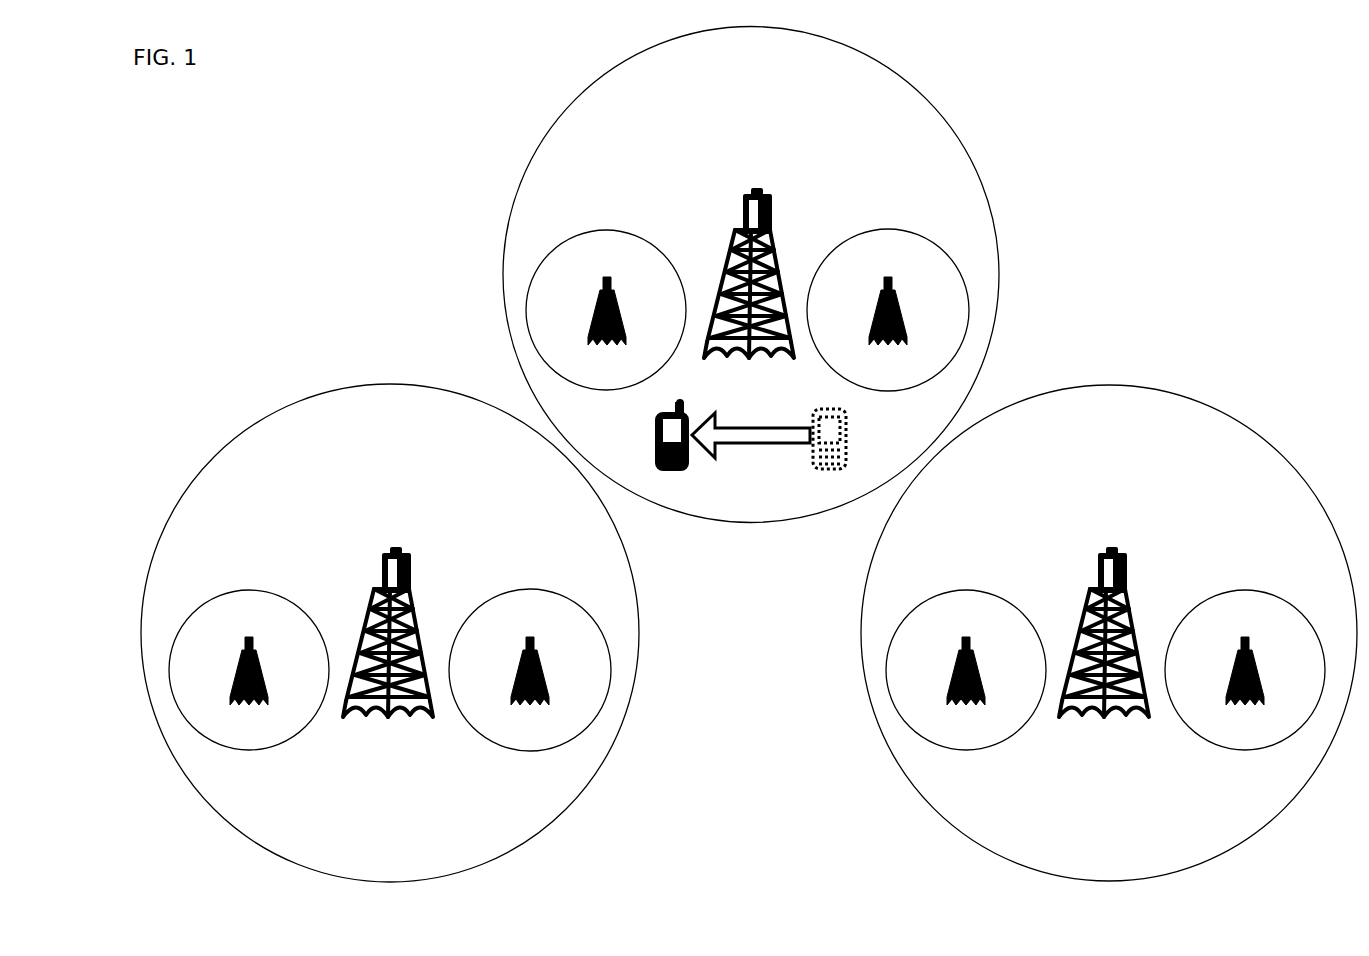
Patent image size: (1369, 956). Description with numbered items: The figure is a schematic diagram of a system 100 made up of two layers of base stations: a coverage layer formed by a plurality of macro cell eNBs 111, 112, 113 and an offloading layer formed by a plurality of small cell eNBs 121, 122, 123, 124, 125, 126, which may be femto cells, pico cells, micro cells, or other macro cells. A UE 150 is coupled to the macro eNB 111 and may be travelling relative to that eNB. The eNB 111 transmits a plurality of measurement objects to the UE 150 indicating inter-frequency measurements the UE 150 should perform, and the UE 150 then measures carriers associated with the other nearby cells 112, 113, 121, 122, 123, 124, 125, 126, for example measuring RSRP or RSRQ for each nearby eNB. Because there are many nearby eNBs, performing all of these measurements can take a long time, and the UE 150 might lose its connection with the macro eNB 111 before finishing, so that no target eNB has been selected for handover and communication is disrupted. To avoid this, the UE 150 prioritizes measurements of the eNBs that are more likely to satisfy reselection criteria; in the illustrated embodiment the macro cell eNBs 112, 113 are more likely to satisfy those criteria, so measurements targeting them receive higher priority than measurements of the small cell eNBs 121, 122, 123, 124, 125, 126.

The system 100 is at (1236, 82).
The macro cell eNB 111 is at (760, 191).
The macro cell eNB 112 is at (400, 550).
The macro cell eNB 113 is at (1117, 550).
The small cell eNB 121 is at (611, 278).
The small cell eNB 122 is at (891, 278).
The small cell eNB 123 is at (254, 638).
The small cell eNB 124 is at (533, 638).
The small cell eNB 125 is at (969, 638).
The small cell eNB 126 is at (1249, 638).
The UE 150 is at (657, 425).